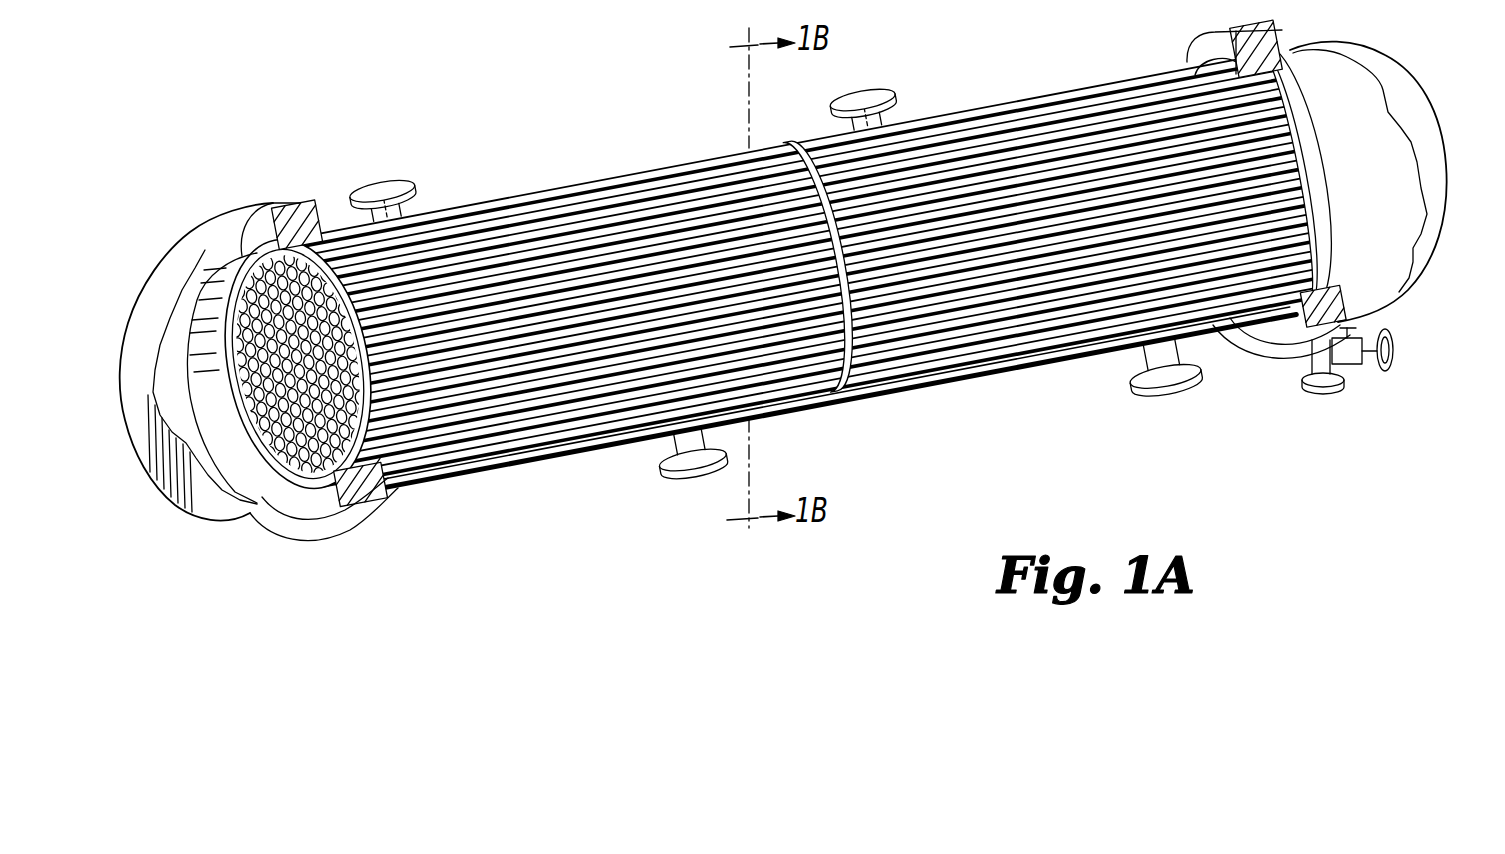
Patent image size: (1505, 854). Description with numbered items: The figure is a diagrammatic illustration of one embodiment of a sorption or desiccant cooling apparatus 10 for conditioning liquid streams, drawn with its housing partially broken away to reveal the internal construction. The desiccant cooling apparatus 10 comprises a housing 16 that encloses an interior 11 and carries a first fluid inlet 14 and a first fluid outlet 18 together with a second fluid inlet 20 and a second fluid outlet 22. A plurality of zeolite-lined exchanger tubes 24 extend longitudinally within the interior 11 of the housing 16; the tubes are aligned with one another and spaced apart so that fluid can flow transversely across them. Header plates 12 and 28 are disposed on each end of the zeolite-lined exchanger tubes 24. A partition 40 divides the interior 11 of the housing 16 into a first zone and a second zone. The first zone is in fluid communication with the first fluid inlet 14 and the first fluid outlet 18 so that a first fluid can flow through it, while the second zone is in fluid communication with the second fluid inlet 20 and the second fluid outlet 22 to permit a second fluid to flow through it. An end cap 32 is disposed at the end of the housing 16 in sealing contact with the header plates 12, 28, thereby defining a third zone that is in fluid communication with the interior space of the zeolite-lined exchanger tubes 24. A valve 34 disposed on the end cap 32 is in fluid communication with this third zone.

The desiccant cooling apparatus 10 is at (805, 278).
The interior 11 is at (588, 423).
The header plate 12 is at (318, 222).
The first fluid inlet 14 is at (400, 187).
The housing 16 is at (1136, 72).
The first fluid outlet 18 is at (668, 470).
The second fluid inlet 20 is at (876, 100).
The second fluid outlet 22 is at (1145, 385).
The zeolite-lined exchanger tubes 24 is at (724, 193).
The header plate 28 is at (1313, 138).
The end cap 32 is at (1417, 283).
The valve 34 is at (1320, 392).
The partition 40 is at (858, 384).